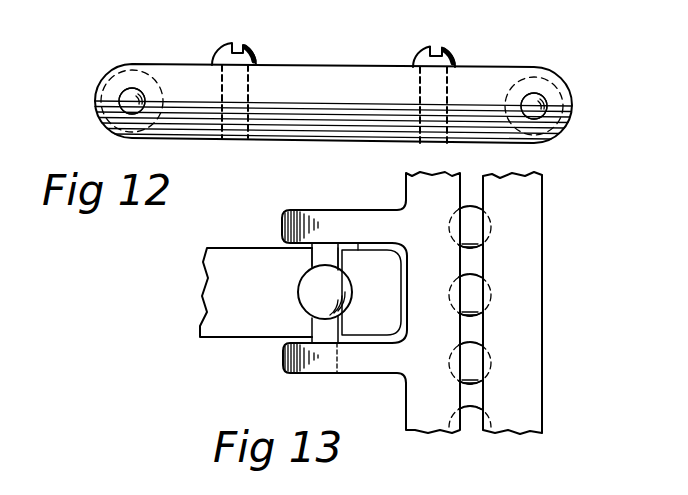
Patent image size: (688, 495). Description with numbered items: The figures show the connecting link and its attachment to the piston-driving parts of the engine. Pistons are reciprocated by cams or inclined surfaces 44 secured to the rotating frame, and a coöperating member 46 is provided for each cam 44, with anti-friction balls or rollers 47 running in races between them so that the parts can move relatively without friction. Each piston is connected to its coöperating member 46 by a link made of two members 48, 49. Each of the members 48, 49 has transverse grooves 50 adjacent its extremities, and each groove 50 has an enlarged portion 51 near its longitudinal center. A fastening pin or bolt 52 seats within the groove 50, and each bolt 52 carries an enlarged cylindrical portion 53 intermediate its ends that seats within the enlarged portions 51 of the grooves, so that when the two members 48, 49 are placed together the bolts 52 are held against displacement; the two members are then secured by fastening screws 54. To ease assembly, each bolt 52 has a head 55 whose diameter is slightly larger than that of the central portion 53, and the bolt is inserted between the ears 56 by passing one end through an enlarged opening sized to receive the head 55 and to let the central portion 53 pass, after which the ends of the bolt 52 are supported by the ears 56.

In FIG. 13, the cam 44 is at (518, 370).
In FIG. 13, the coöperating member 46 is at (432, 407).
In FIG. 13, the anti-friction balls 47 is at (472, 363).
In FIG. 12, the link member 48 is at (287, 127).
In FIG. 13, the link member 48 is at (225, 307).
In FIG. 12, the link member 49 is at (317, 85).
In FIG. 12, the transverse groove 50 is at (95, 107).
In FIG. 13, the transverse groove 50 is at (313, 260).
In FIG. 13, the enlarged portion 51 is at (300, 285).
In FIG. 12, the fastening bolt 52 is at (130, 97).
In FIG. 13, the fastening bolt 52 is at (310, 337).
In FIG. 12, the enlarged cylindrical portion 53 is at (143, 80).
In FIG. 13, the enlarged cylindrical portion 53 is at (313, 292).
In FIG. 12, the fastening screw 54 is at (241, 45).
In FIG. 13, the head 55 is at (358, 243).
In FIG. 13, the ear 56 is at (368, 222).